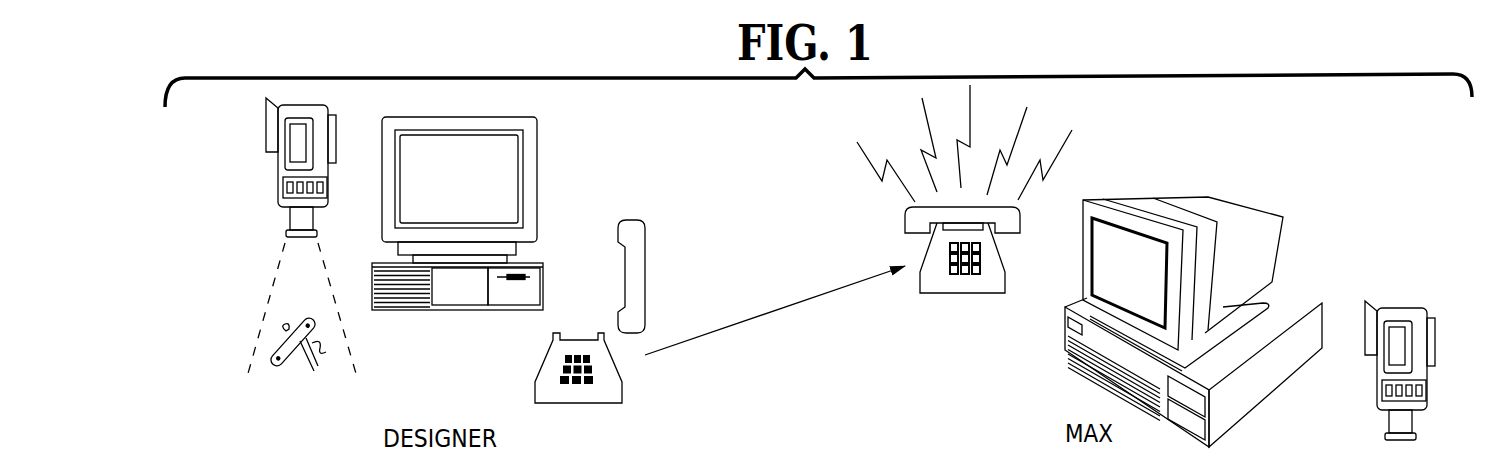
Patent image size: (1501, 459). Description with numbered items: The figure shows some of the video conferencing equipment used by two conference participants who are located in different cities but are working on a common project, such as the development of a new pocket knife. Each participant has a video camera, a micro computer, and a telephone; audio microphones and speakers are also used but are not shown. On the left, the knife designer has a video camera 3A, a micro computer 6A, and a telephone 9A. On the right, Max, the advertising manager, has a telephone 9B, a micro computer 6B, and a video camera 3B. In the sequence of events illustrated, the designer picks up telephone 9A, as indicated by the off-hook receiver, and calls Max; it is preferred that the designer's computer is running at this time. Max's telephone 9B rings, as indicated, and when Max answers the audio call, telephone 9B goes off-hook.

The video camera 3A is at (264, 180).
The micro computer 6A is at (549, 128).
The telephone 9A is at (654, 218).
The telephone 9B is at (1052, 120).
The micro computer 6B is at (1290, 185).
The video camera 3B is at (1406, 292).